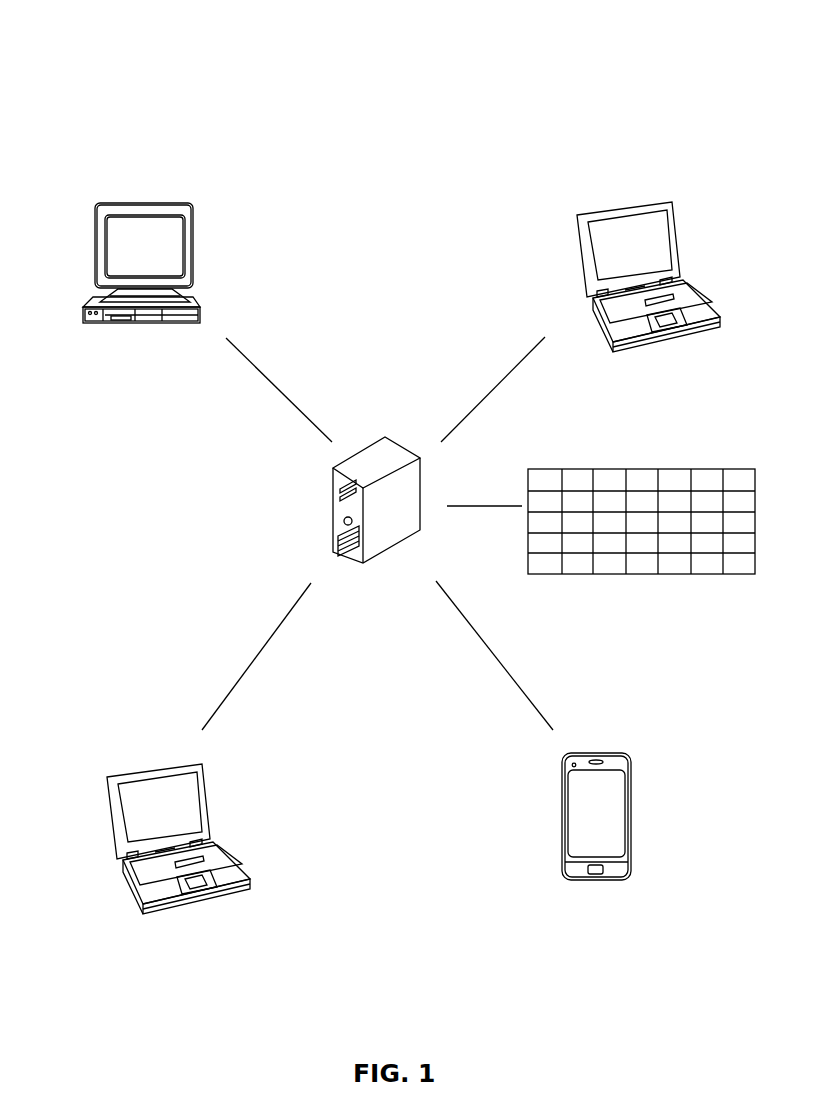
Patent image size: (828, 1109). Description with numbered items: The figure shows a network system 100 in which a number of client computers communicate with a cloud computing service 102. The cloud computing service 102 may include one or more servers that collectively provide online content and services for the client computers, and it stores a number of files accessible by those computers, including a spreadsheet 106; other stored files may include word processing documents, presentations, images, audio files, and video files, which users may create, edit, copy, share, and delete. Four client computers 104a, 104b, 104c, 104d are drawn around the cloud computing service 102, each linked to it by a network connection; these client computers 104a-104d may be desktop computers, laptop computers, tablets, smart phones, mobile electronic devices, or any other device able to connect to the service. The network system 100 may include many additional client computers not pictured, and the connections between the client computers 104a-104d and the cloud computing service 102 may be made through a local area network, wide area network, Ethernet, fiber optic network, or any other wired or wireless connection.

The network system 100 is at (236, 40).
The cloud computing service 102 is at (385, 437).
The client computer 104a is at (120, 200).
The client computer 104b is at (589, 210).
The client computer 104c is at (118, 775).
The client computer 104d is at (603, 752).
The spreadsheet 106 is at (635, 458).